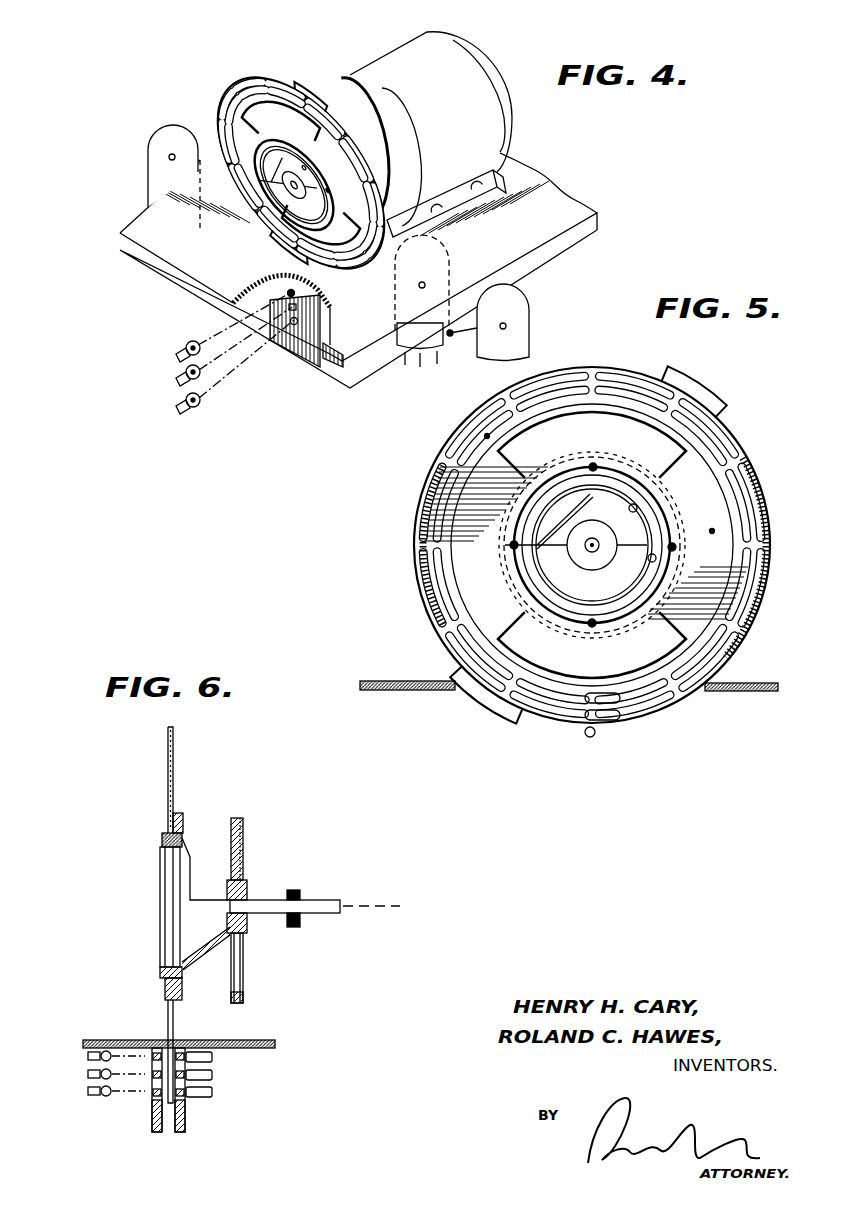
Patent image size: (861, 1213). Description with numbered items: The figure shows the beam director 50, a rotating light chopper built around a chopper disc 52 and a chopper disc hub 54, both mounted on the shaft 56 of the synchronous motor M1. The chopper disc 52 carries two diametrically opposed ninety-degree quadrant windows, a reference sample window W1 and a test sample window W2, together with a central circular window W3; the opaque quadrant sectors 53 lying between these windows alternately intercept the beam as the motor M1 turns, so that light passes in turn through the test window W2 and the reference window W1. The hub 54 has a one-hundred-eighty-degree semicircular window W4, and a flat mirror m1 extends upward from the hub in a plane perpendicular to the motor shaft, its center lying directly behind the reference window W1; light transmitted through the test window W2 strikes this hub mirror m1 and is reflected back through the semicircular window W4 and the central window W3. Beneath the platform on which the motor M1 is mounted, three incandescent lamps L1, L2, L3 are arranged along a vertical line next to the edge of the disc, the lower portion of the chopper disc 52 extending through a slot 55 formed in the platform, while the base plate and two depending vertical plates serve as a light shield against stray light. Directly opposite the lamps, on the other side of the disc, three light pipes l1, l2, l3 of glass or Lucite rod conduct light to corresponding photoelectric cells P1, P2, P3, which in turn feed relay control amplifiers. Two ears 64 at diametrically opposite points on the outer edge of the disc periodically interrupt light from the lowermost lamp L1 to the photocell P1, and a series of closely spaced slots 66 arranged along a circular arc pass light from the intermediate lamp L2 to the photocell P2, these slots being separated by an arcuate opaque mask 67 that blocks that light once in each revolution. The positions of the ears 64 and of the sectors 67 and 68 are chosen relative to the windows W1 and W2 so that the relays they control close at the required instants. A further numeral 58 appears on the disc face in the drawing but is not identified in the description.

In FIG. 4, the beam director 50 is at (311, 164).
In FIG. 5, the beam director 50 is at (593, 555).
In FIG. 6, the beam director 50 is at (164, 912).
In FIG. 4, the chopper disc 52 is at (307, 92).
In FIG. 5, the chopper disc 52 is at (662, 375).
In FIG. 6, the chopper disc 52 is at (179, 733).
In FIG. 5, the opaque quadrant sectors 53 is at (462, 564).
In FIG. 6, the chopper disc hub 54 is at (250, 892).
In FIG. 4, the slot 55 is at (266, 258).
In FIG. 5, the slot 55 is at (454, 692).
In FIG. 6, the slot 55 is at (172, 1040).
In FIG. 4, the shaft 56 is at (335, 173).
In FIG. 6, the shaft 56 is at (330, 900).
In FIG. 5, the sector plate 58 is at (712, 531).
In FIG. 4, the ears 64 is at (377, 127).
In FIG. 5, the ears 64 is at (724, 403).
In FIG. 4, the slots 66 is at (274, 88).
In FIG. 5, the slots 66 is at (577, 373).
In FIG. 5, the opaque sector or mask 67 is at (760, 606).
In FIG. 5, the sector 68 is at (487, 436).
In FIG. 5, the reference sample window W1 is at (526, 614).
In FIG. 6, the reference sample window W1 is at (166, 1010).
In FIG. 4, the test sample window W2 is at (326, 106).
In FIG. 5, the test sample window W2 is at (610, 410).
In FIG. 6, the test sample window W2 is at (174, 795).
In FIG. 4, the central circular window W3 is at (313, 205).
In FIG. 5, the central circular window W3 is at (677, 549).
In FIG. 6, the central circular window W3 is at (160, 962).
In FIG. 4, the semicircular window W4 is at (294, 184).
In FIG. 5, the semicircular window W4 is at (638, 509).
In FIG. 6, the semicircular window W4 is at (190, 873).
In FIG. 4, the synchronous motor M1 is at (470, 141).
In FIG. 5, the flat mirror m1 is at (576, 532).
In FIG. 6, the flat mirror m1 is at (226, 818).
In FIG. 4, the photoelectric cell P1 is at (530, 318).
In FIG. 4, the photoelectric cell P2 is at (448, 265).
In FIG. 4, the photoelectric cell P3 is at (148, 160).
In FIG. 4, the incandescent lamp L1 is at (186, 400).
In FIG. 6, the incandescent lamp L1 is at (88, 1094).
In FIG. 4, the incandescent lamp L2 is at (186, 372).
In FIG. 6, the incandescent lamp L2 is at (88, 1074).
In FIG. 4, the incandescent lamp L3 is at (200, 340).
In FIG. 6, the incandescent lamp L3 is at (88, 1056).
In FIG. 4, the light pipe l1 is at (294, 326).
In FIG. 5, the light pipe l1 is at (598, 735).
In FIG. 6, the light pipe l1 is at (198, 1097).
In FIG. 4, the light pipe l2 is at (290, 313).
In FIG. 5, the light pipe l2 is at (588, 720).
In FIG. 6, the light pipe l2 is at (213, 1078).
In FIG. 4, the light pipe l3 is at (288, 291).
In FIG. 5, the light pipe l3 is at (586, 702).
In FIG. 6, the light pipe l3 is at (212, 1058).